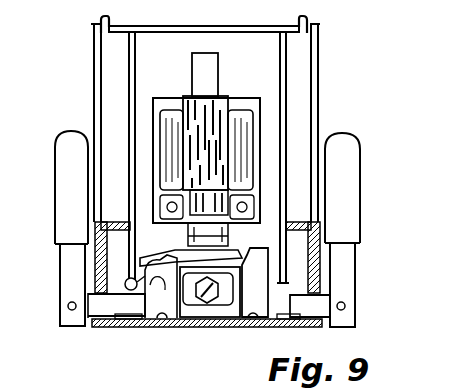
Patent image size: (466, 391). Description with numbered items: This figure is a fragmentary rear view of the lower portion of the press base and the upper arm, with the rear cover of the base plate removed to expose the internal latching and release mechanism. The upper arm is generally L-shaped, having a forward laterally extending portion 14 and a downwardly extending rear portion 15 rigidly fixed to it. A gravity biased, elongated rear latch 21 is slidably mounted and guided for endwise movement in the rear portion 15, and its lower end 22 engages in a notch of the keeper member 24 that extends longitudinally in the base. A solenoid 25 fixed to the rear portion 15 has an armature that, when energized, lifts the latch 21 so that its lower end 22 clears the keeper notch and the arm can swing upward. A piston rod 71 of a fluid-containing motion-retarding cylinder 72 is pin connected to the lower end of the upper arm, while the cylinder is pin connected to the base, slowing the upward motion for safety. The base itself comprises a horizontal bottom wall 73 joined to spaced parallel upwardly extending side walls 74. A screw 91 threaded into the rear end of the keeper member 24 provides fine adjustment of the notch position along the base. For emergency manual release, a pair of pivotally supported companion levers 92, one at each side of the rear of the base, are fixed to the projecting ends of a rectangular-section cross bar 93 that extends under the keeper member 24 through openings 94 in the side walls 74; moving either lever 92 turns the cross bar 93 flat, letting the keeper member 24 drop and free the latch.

The forward laterally extending portion 14 is at (182, 27).
The downwardly extending rear portion 15 is at (129, 100).
The rear latch 21 is at (219, 78).
The lower end of latch 22 is at (255, 282).
The keeper member 24 is at (200, 322).
The solenoid 25 is at (183, 97).
The piston rod 71 is at (152, 260).
The motion-retarding cylinder 72 is at (126, 280).
The bottom wall 73 is at (135, 327).
The side walls 74 is at (105, 158).
The screw 91 is at (222, 310).
The companion levers 92 is at (66, 133).
The cross bar 93 is at (89, 322).
The openings 94 is at (90, 294).